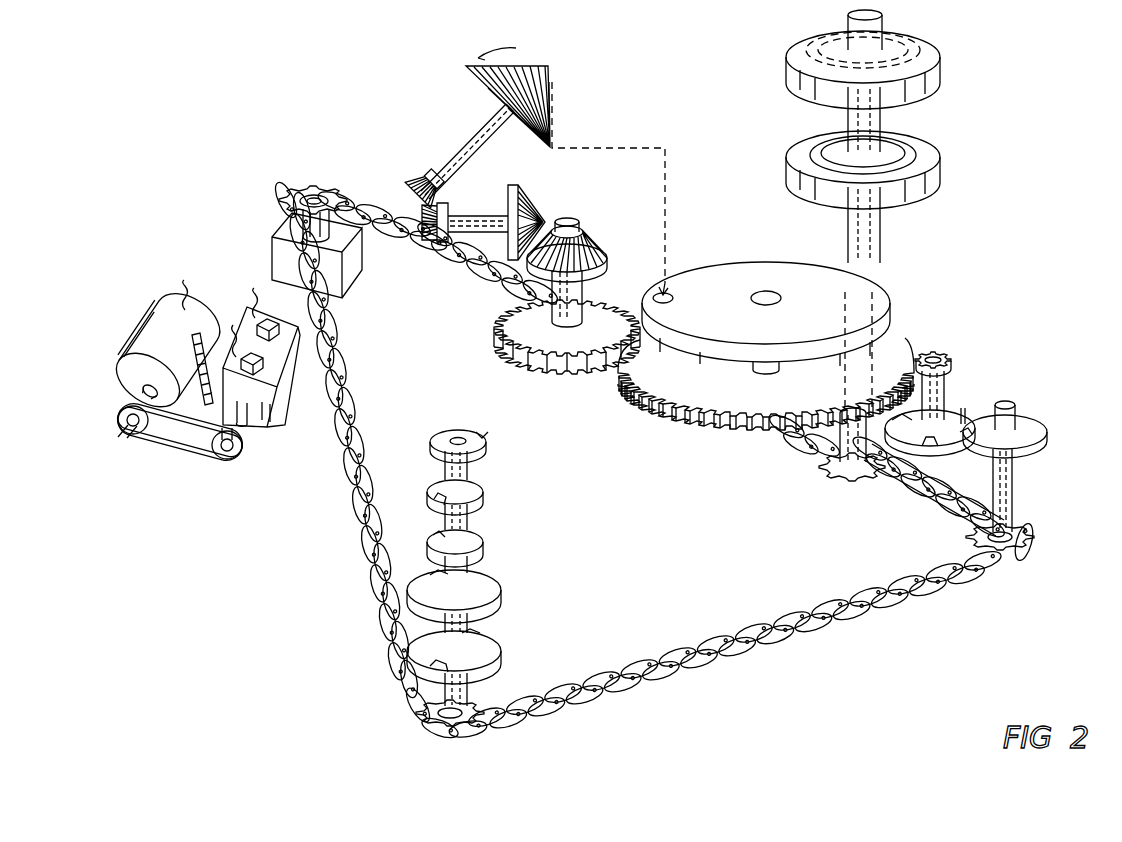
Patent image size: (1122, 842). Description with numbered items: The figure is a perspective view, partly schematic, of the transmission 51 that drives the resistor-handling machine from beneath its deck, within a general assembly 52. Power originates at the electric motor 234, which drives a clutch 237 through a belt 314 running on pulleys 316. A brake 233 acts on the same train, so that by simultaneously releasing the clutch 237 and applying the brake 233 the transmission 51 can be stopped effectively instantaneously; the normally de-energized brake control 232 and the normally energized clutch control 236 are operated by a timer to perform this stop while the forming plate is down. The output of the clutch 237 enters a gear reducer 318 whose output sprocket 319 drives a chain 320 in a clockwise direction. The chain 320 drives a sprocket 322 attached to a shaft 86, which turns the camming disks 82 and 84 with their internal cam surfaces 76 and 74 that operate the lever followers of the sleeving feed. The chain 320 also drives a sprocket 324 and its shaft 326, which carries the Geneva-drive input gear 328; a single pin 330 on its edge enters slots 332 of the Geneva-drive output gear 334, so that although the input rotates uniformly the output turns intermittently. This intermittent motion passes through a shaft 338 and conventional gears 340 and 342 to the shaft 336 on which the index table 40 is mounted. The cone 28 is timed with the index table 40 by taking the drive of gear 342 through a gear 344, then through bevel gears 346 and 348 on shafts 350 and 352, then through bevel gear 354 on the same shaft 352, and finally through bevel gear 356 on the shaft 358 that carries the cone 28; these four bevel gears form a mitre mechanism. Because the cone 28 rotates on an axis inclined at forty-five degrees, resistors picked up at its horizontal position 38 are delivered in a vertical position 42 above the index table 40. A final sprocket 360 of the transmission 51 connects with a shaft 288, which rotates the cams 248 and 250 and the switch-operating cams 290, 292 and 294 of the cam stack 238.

The horizontal position 38 is at (532, 62).
The cone 28 is at (546, 80).
The vertical position 42 is at (556, 147).
The shaft 358 is at (452, 163).
The bevel gear 356 is at (408, 183).
The bevel gear 354 is at (434, 243).
The shaft 352 is at (476, 217).
The bevel gear 348 is at (522, 196).
The bevel gear 346 is at (585, 240).
The shaft 350 is at (594, 264).
The gear 344 is at (495, 342).
The gear 342 is at (624, 393).
The index table 40 is at (733, 262).
The shaft 336 is at (772, 372).
The transmission 51 is at (614, 482).
The upper assembly 52 is at (966, 115).
The internal cam surface 74 is at (810, 38).
The camming disk 84 is at (788, 60).
The camming disk 82 is at (800, 138).
The internal cam surface 76 is at (812, 152).
The shaft 86 is at (881, 230).
The sprocket 319 is at (316, 188).
The gear reducer 318 is at (285, 233).
The brake control 232 is at (281, 324).
The brake 233 is at (298, 340).
The clutch control 236 is at (266, 368).
The clutch 237 is at (272, 404).
The electric motor 234 is at (150, 322).
The pulleys 316 is at (122, 426).
The belt 314 is at (184, 444).
The chain 320 is at (362, 522).
The cam 250 is at (405, 590).
The cam 248 is at (420, 650).
The cam 294 is at (430, 442).
The cam 292 is at (428, 493).
The cam 290 is at (485, 539).
The shaft 288 is at (468, 566).
The cam stack 238 is at (537, 640).
The final sprocket 360 is at (470, 698).
The gear 340 is at (941, 354).
The shaft 338 is at (965, 410).
The pin 330 is at (1018, 405).
The slots 332 is at (930, 450).
The Geneva-drive input gear 328 is at (1022, 448).
The Geneva-drive output gear 334 is at (912, 462).
The sprocket 322 is at (828, 478).
The shaft 326 is at (1013, 496).
The sprocket 324 is at (962, 555).